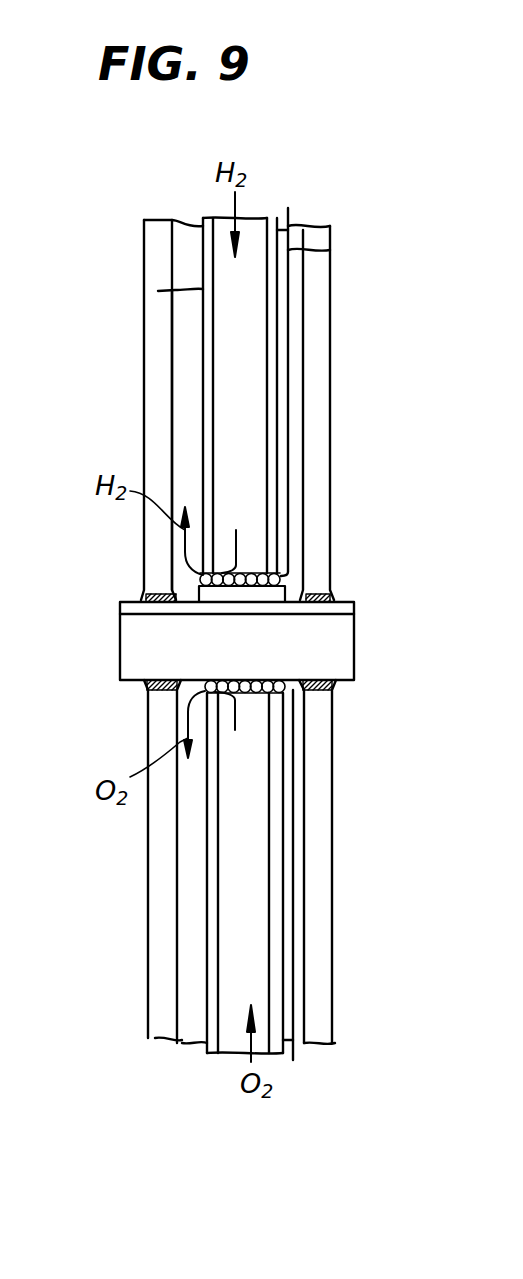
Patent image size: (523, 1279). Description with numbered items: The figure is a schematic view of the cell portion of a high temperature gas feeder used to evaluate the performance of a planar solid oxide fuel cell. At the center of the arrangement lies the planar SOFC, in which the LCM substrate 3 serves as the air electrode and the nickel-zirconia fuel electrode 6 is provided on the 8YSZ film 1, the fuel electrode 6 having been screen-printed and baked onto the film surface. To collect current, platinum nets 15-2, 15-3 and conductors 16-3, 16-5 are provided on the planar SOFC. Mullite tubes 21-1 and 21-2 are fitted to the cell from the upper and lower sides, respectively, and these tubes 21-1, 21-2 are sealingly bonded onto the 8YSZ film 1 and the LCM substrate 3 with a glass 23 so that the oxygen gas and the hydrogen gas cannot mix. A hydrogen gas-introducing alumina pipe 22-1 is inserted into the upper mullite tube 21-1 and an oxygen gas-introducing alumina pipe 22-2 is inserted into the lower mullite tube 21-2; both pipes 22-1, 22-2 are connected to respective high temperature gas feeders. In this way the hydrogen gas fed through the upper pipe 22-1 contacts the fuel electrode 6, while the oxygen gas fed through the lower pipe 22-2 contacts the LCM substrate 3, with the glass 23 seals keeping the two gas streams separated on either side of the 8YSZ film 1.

The 8YSZ film 1 is at (356, 608).
The LCM substrate 3 is at (342, 648).
The fuel electrode 6 is at (200, 597).
The platinum net 15-2 is at (295, 694).
The platinum net 15-3 is at (282, 583).
The conductor 16-3 is at (293, 1052).
The conductor 16-5 is at (330, 250).
The mullite tube 21-1 is at (330, 360).
The mullite tube 21-2 is at (335, 818).
The hydrogen gas-introducing alumina pipe 22-1 is at (158, 291).
The oxygen gas-introducing alumina pipe 22-2 is at (205, 1044).
The glass 23 is at (333, 600).